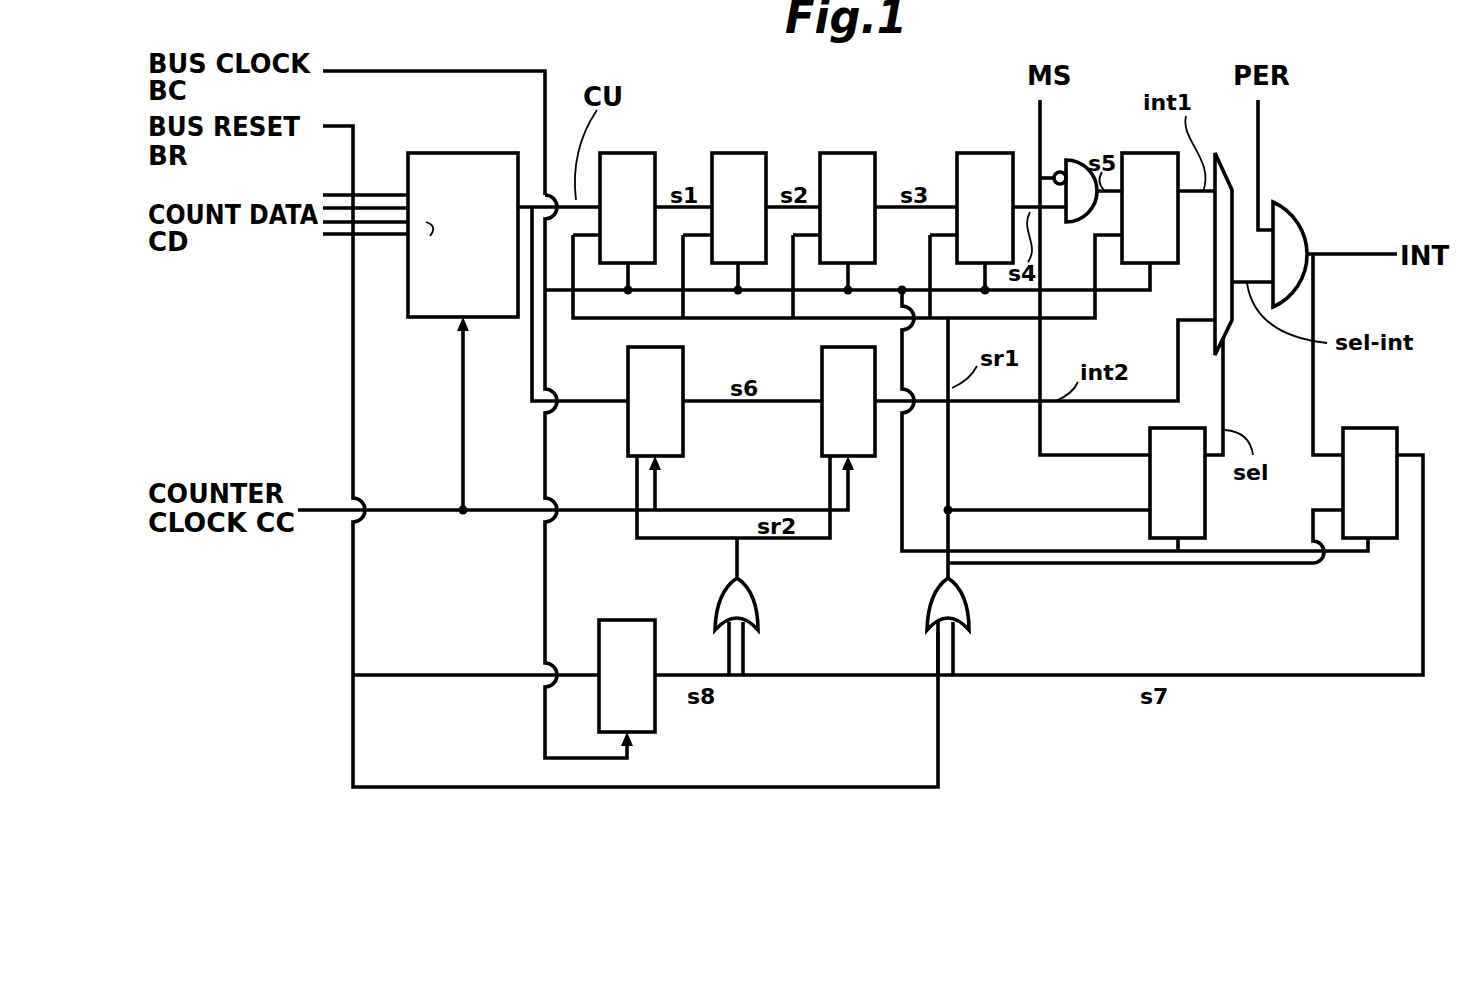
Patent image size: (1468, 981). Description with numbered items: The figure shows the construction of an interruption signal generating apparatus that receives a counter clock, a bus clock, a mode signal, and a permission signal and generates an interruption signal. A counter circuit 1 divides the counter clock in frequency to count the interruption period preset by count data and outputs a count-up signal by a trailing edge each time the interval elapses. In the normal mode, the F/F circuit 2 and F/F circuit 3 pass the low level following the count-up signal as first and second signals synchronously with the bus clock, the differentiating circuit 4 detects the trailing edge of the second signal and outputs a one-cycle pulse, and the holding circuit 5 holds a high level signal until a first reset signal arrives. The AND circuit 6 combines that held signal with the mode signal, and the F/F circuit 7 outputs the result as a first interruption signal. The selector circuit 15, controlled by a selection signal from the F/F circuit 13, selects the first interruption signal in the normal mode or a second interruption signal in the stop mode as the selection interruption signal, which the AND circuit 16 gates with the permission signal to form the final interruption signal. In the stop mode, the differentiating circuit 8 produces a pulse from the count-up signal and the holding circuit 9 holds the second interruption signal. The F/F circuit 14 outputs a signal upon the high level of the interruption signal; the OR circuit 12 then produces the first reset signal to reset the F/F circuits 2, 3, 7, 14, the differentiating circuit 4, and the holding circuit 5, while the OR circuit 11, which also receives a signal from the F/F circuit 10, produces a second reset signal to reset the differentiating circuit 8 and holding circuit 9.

The counter circuit 1 is at (498, 131).
The F/F circuit 2 is at (603, 131).
The F/F circuit 3 is at (714, 131).
The differentiating circuit 4 is at (823, 131).
The holding circuit 5 is at (962, 131).
The AND circuit 6 is at (1068, 167).
The F/F circuit 7 is at (1124, 131).
The differentiating circuit 8 is at (630, 325).
The holding circuit 9 is at (823, 325).
The F/F circuit 10 is at (603, 598).
The OR circuit 11 is at (750, 608).
The OR circuit 12 is at (960, 608).
The F/F circuit 13 is at (1150, 410).
The F/F circuit 14 is at (1344, 410).
The selector circuit 15 is at (1230, 178).
The AND circuit 16 is at (1302, 236).